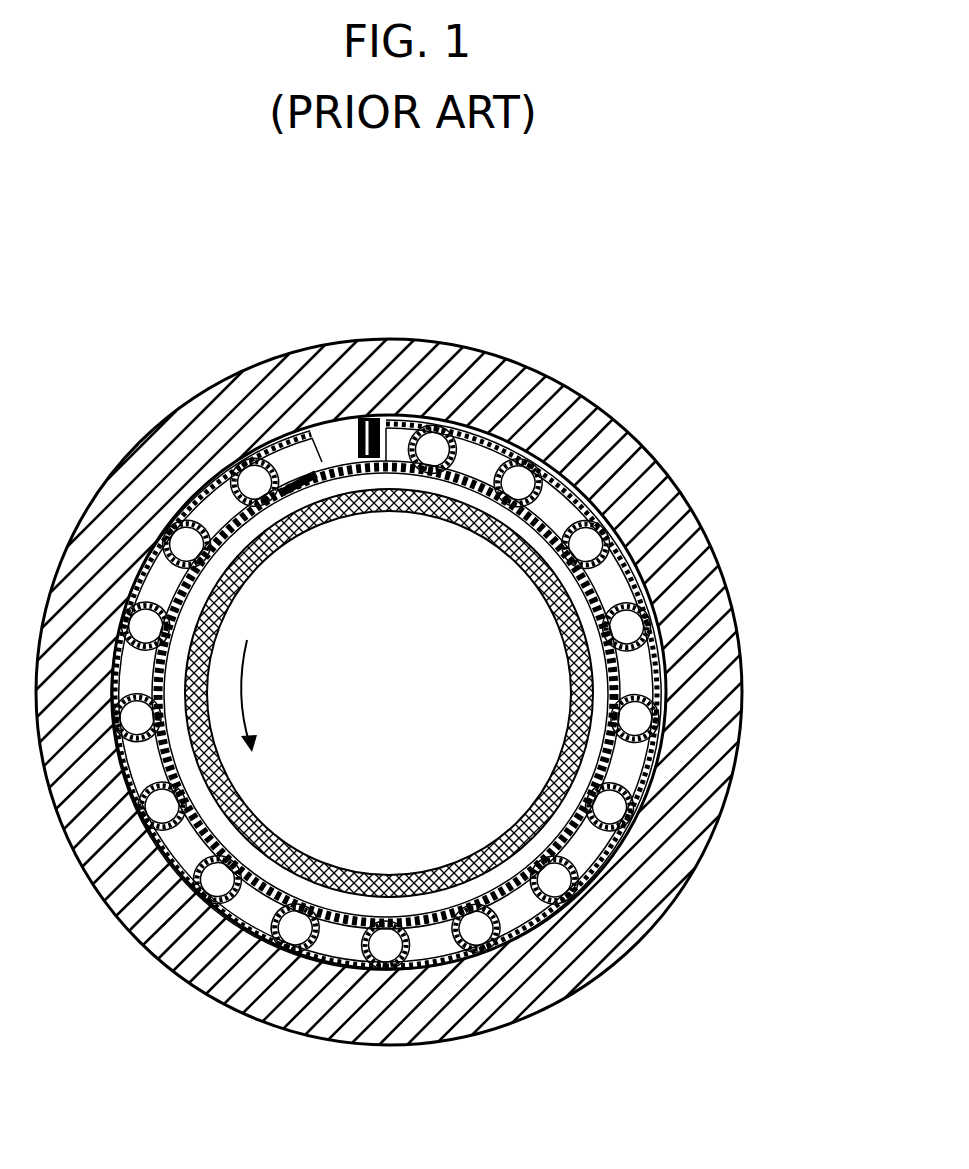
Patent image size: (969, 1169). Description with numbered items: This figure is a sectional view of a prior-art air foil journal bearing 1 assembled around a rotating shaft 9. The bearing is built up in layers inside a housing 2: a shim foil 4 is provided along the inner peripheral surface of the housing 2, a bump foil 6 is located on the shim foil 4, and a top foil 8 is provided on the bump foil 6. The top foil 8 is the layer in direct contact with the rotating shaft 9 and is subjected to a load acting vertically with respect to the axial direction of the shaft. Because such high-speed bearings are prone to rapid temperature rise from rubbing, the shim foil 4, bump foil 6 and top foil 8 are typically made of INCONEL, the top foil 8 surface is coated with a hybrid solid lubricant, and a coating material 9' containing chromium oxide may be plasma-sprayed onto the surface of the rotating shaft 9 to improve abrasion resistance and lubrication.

The air foil journal bearing 1 is at (501, 319).
The housing 2 is at (660, 528).
The shim foil 4 is at (654, 650).
The bump foil 6 is at (603, 823).
The top foil 8 is at (433, 930).
The rotating shaft 9 is at (210, 472).
The coating material 9' is at (517, 425).